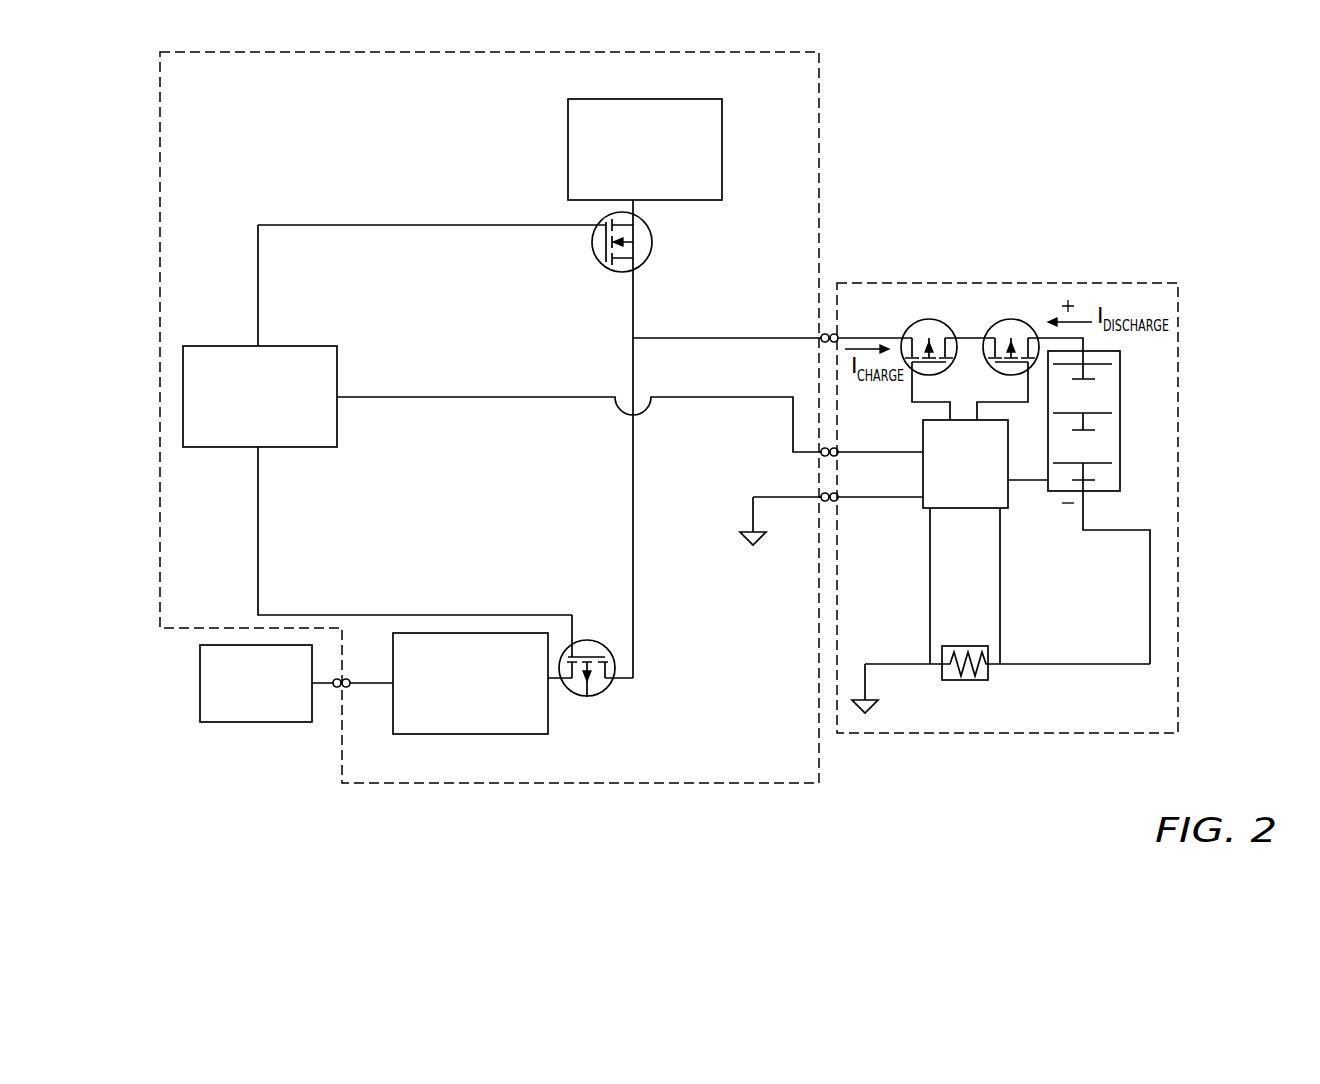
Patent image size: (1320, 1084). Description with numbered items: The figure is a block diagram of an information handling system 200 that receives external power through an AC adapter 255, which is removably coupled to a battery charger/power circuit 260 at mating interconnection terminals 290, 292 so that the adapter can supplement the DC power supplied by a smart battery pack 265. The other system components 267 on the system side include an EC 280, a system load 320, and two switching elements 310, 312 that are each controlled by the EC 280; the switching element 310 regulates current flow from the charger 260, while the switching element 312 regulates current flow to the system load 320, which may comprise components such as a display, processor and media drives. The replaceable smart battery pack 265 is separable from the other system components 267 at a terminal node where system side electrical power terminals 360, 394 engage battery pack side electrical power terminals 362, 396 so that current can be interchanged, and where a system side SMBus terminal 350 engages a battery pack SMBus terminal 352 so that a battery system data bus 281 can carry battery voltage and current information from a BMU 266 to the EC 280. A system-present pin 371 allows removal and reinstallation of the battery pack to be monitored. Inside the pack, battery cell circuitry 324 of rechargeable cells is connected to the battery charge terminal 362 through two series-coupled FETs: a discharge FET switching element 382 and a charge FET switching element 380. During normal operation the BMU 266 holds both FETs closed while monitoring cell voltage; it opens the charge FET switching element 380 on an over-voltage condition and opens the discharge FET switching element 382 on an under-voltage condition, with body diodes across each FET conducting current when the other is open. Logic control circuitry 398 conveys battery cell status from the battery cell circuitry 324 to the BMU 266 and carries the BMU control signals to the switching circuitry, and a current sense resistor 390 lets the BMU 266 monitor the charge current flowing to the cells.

The information handling system 200 is at (1040, 77).
The other system components 267 is at (821, 147).
The smart battery pack 265 is at (1093, 283).
The system load 320 is at (568, 133).
The switching element 312 is at (597, 262).
The EC 280 is at (306, 448).
The battery system data bus (SMBus) 281 is at (445, 396).
The system side electrical power terminal 360 is at (821, 334).
The battery pack side electrical power terminal 362 is at (838, 334).
The system side SMBus terminal 350 is at (821, 457).
The SMBus terminal 352 is at (838, 457).
The system side electrical power terminal 394 is at (821, 501).
The battery pack side electrical power terminal 396 is at (838, 501).
The system-present pin 371 is at (910, 498).
The discharge FET switching element 382 is at (923, 374).
The charge FET switching element 380 is at (1015, 374).
The BMU 266 is at (1010, 462).
The logic control circuitry 398 is at (1033, 486).
The battery cell circuitry 324 is at (1110, 492).
The current sense resistor 390 is at (968, 681).
The AC adapter 255 is at (224, 723).
The mating interconnection terminal 290 is at (336, 679).
The mating interconnection terminal 292 is at (347, 679).
The battery charger/power circuit 260 is at (472, 735).
The switching element 310 is at (600, 698).